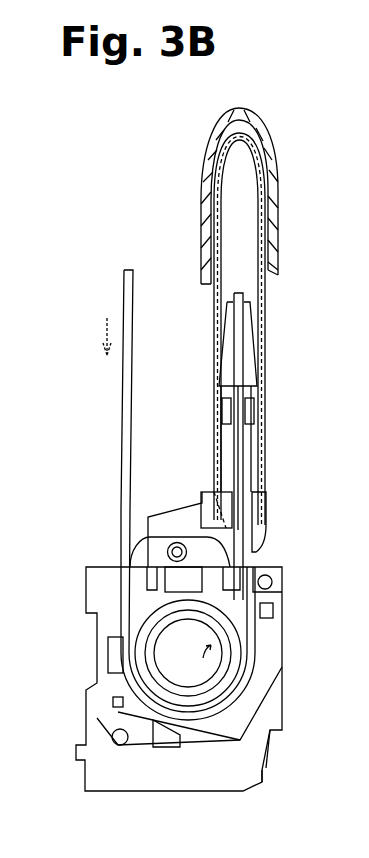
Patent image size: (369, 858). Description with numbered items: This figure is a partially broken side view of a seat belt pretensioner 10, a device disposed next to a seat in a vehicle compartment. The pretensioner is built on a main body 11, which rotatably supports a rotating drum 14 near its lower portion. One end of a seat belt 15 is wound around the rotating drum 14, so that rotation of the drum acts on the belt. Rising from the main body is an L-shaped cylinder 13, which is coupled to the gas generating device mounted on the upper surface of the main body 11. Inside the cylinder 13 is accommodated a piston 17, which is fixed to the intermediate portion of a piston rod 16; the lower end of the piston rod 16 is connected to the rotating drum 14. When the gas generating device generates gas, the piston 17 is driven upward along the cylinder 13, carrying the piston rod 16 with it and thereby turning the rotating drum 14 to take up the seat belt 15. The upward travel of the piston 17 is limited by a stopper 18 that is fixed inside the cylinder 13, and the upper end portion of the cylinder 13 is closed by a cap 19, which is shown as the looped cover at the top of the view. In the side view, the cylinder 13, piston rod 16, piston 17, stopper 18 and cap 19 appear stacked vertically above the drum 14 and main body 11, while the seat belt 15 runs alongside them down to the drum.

The seat belt pretensioner 10 is at (318, 296).
The main body 11 is at (276, 626).
The cylinder 13 is at (216, 400).
The rotating drum 14 is at (245, 650).
The seat belt 15 is at (124, 397).
The piston rod 16 is at (243, 466).
The piston 17 is at (254, 404).
The stopper 18 is at (250, 345).
The cap 19 is at (273, 178).